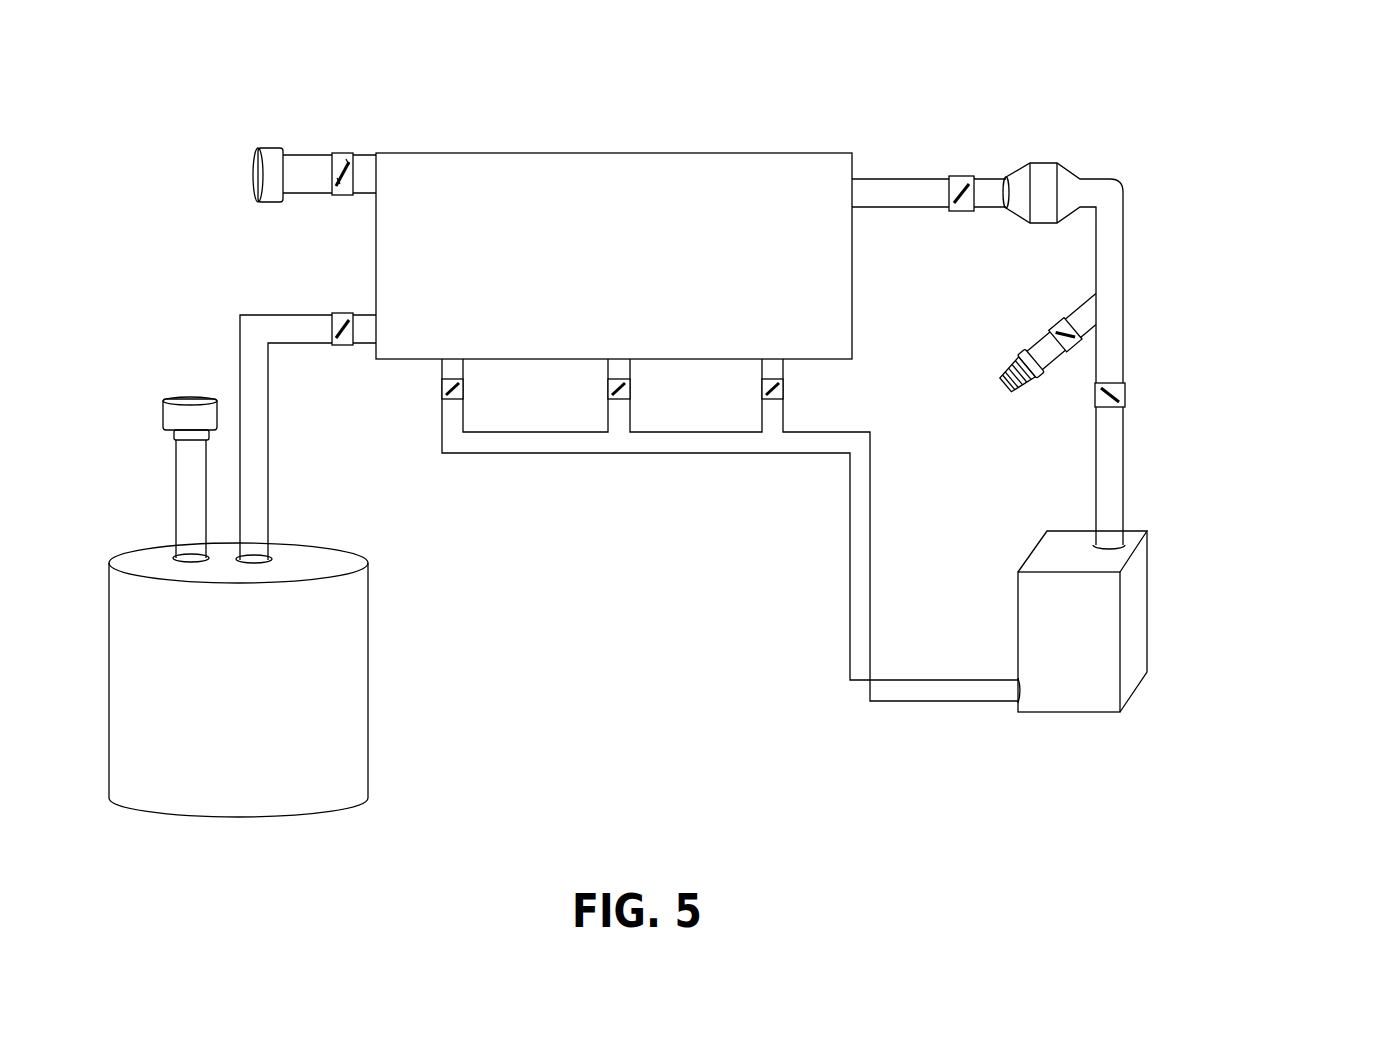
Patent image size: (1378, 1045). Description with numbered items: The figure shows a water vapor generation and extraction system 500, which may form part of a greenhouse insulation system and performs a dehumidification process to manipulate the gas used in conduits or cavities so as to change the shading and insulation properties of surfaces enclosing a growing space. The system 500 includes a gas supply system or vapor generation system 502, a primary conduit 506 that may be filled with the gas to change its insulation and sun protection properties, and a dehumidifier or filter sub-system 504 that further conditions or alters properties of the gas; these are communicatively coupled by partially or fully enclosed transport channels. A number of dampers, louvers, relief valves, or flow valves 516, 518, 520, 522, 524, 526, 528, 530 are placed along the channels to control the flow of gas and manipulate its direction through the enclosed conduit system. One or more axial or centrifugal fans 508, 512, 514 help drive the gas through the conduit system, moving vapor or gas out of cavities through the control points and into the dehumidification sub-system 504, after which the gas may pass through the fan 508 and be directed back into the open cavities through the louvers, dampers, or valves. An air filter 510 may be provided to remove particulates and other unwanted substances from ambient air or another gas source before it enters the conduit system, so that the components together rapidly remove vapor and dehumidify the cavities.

The water vapor generation and extraction system 500 is at (1310, 105).
The gas supply system or vapor generation system 502 is at (368, 685).
The dehumidifier or filter sub-system 504 is at (1147, 626).
The primary conduit 506 is at (566, 152).
The axial or centrifugal fan 508 is at (1040, 160).
The air filter 510 is at (1010, 398).
The axial or centrifugal fan 512 is at (178, 398).
The axial or centrifugal fan 514 is at (253, 179).
The flow valve 516 is at (345, 196).
The flow valve 518 is at (341, 346).
The flow valve 520 is at (442, 390).
The flow valve 522 is at (608, 388).
The flow valve 524 is at (762, 388).
The flow valve 526 is at (957, 212).
The flow valve 528 is at (1125, 386).
The flow valve 530 is at (1056, 335).